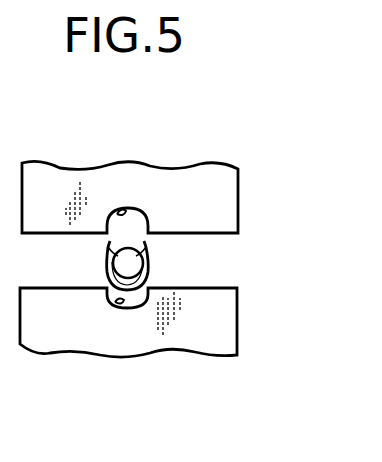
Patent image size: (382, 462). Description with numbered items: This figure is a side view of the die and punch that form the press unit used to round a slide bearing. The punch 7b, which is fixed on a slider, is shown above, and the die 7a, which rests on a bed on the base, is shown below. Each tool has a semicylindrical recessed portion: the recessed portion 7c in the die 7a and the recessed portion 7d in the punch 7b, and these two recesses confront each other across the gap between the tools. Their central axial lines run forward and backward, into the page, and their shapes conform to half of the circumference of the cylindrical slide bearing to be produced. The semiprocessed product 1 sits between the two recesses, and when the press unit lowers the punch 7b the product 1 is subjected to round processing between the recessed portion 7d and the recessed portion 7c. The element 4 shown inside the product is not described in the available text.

The semiprocessed product 1 is at (150, 252).
The cable / pin 4 is at (128, 266).
The die 7a is at (178, 332).
The punch 7b is at (179, 190).
The semicylindrical recessed portion of the die 7c is at (107, 303).
The semicylindrical recessed portion of the punch 7d is at (119, 212).